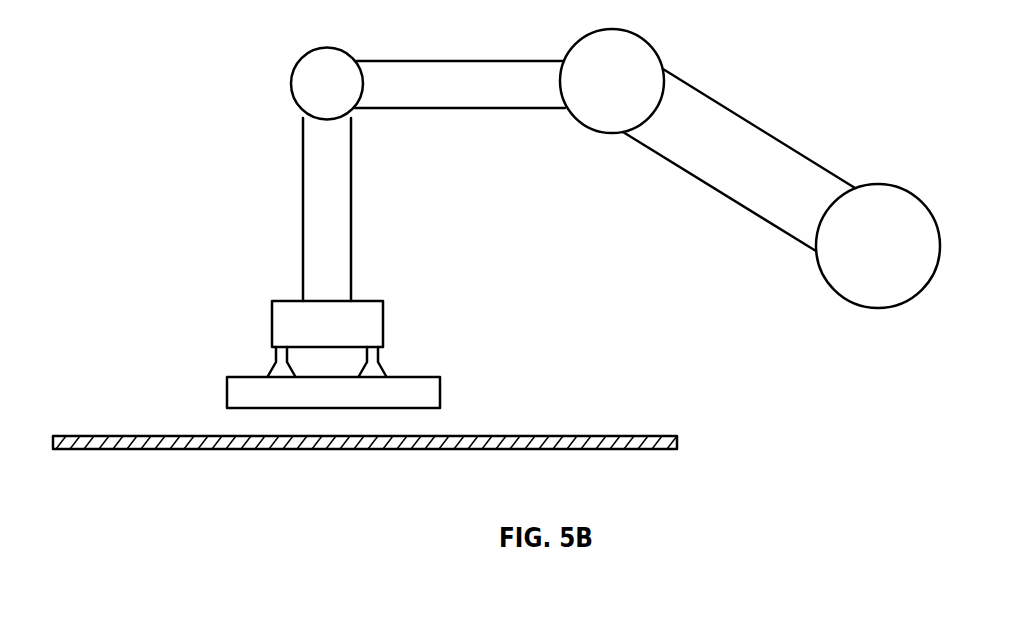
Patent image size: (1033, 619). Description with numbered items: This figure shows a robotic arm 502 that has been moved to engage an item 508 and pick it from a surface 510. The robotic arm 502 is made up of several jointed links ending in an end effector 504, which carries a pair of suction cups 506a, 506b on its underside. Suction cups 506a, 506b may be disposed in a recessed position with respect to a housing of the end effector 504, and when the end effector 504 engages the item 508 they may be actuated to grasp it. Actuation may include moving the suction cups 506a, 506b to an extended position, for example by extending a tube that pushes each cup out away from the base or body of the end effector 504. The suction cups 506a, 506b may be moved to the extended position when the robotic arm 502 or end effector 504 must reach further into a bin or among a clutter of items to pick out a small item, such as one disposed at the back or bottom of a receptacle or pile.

The robotic arm 502 is at (792, 147).
The end effector 504 is at (383, 300).
The suction cup 506a is at (273, 358).
The suction cup 506b is at (380, 358).
The item 508 is at (440, 377).
The surface 510 is at (680, 443).